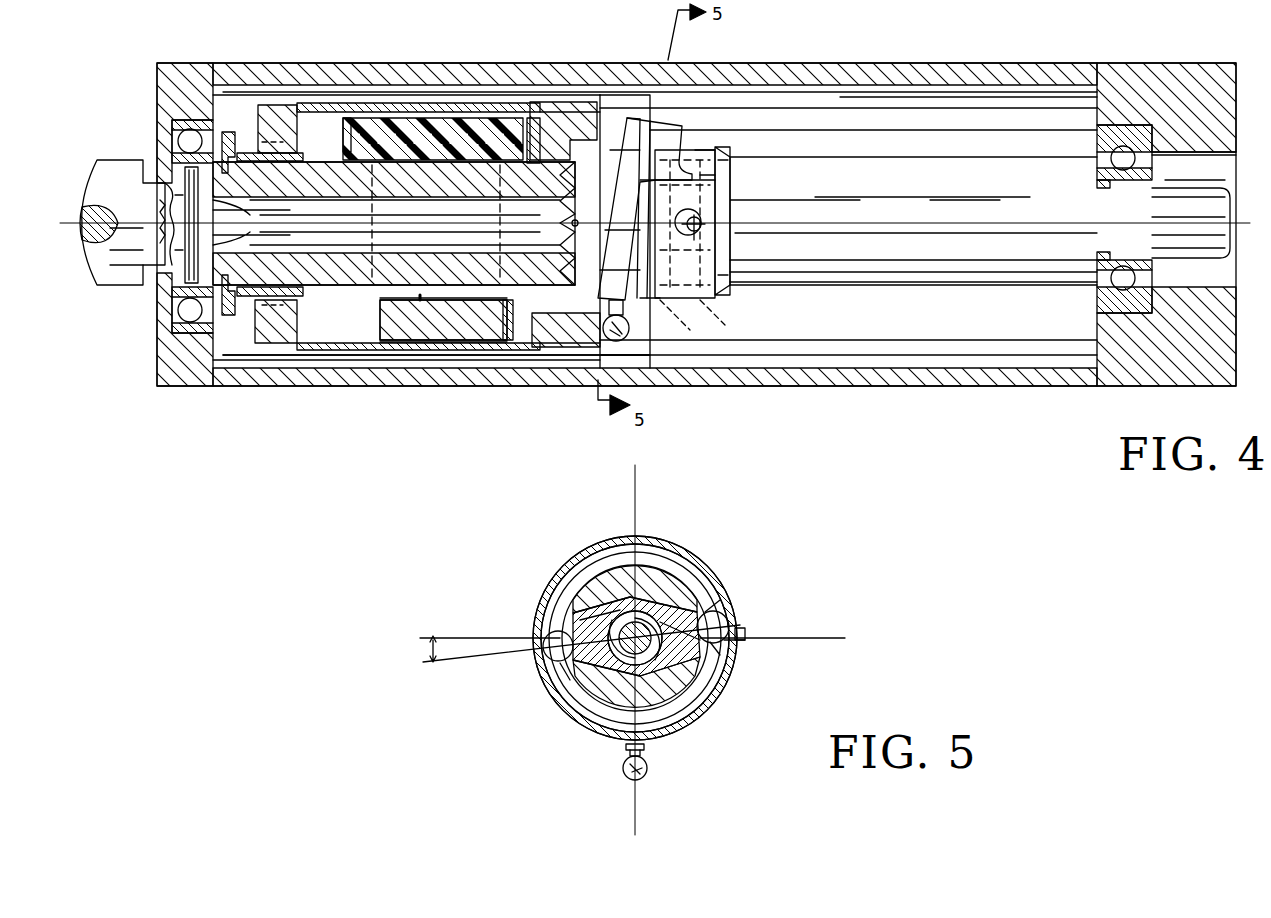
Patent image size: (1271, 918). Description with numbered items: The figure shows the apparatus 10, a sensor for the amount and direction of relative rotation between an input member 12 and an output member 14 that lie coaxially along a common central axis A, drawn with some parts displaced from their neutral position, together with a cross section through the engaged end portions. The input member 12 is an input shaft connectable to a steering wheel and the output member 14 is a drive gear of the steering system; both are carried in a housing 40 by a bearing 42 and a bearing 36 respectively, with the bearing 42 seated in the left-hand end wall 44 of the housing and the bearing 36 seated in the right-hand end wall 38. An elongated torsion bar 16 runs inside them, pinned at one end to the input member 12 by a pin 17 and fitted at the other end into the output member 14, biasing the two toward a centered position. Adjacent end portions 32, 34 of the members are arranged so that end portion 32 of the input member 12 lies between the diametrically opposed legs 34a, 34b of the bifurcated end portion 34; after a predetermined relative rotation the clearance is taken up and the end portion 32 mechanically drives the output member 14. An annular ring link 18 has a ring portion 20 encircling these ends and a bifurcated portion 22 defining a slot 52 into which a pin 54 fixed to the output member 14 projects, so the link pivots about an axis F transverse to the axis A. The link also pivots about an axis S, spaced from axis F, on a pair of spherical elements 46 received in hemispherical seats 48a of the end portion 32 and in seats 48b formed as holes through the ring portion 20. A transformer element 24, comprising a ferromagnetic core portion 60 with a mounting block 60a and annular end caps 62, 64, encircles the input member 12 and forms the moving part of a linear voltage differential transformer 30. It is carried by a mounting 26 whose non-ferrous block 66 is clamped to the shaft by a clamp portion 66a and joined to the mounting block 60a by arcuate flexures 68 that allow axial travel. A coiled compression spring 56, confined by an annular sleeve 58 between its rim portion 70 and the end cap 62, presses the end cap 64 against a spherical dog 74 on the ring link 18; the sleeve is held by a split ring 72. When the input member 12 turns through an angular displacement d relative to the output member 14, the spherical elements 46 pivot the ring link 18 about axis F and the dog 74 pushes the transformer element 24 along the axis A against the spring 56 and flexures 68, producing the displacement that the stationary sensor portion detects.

In FIG. 4, the apparatus 10 is at (800, 110).
In FIG. 4, the input member 12 is at (122, 162).
In FIG. 5, the input member 12 is at (578, 672).
In FIG. 4, the output member 14 is at (945, 283).
In FIG. 5, the output member 14 is at (585, 707).
In FIG. 4, the torsion bar 16 is at (305, 235).
In FIG. 5, the torsion bar 16 is at (650, 620).
In FIG. 4, the pin 17 is at (160, 268).
In FIG. 4, the ring link 18 is at (668, 122).
In FIG. 5, the ring link 18 is at (612, 538).
In FIG. 4, the ring portion 20 is at (655, 190).
In FIG. 4, the portion 22 is at (712, 195).
In FIG. 4, the transformer element 24 is at (455, 370).
In FIG. 4, the mounting 26 is at (460, 330).
In FIG. 4, the linear voltage differential transformer 30 is at (285, 368).
In FIG. 4, the end portion 32 is at (705, 300).
In FIG. 5, the end portion 32 is at (655, 600).
In FIG. 4, the end portion 34 is at (718, 298).
In FIG. 5, the leg 34a is at (620, 600).
In FIG. 5, the leg 34b is at (665, 712).
In FIG. 4, the bearing 36 is at (1121, 125).
In FIG. 4, the right end cap 38 is at (1172, 140).
In FIG. 4, the housing 40 is at (840, 372).
In FIG. 4, the bearing 42 is at (193, 120).
In FIG. 4, the left end cap 44 is at (165, 135).
In FIG. 4, the spherical elements 46 is at (530, 220).
In FIG. 5, the spherical elements 46 is at (552, 642).
In FIG. 5, the seats 48a is at (560, 662).
In FIG. 5, the seats 48b is at (724, 618).
In FIG. 4, the slot 52 is at (722, 200).
In FIG. 4, the pin 54 is at (700, 228).
In FIG. 5, the pin 54 is at (722, 630).
In FIG. 4, the coiled compression spring 56 is at (240, 142).
In FIG. 4, the annular sleeve 58 is at (252, 362).
In FIG. 4, the core portion 60 is at (378, 106).
In FIG. 4, the mounting block 60a is at (520, 348).
In FIG. 4, the annular end cap 62 is at (275, 123).
In FIG. 4, the annular end cap 64 is at (560, 115).
In FIG. 4, the non-ferrous block 66 is at (375, 118).
In FIG. 4, the clamp portion 66a is at (420, 300).
In FIG. 4, the flexures 68 is at (430, 135).
In FIG. 4, the rim portion 70 is at (228, 130).
In FIG. 4, the split ring 72 is at (185, 280).
In FIG. 4, the spherical dog 74 is at (630, 335).
In FIG. 5, the spherical dog 74 is at (648, 778).
In FIG. 4, the central axis A is at (943, 110).
In FIG. 5, the central axis A is at (735, 590).
In FIG. 4, the axis S is at (650, 130).
In FIG. 5, the axis S is at (450, 660).
In FIG. 4, the axis F is at (690, 300).
In FIG. 5, the axis F is at (450, 638).
In FIG. 5, the angular displacement d is at (430, 650).